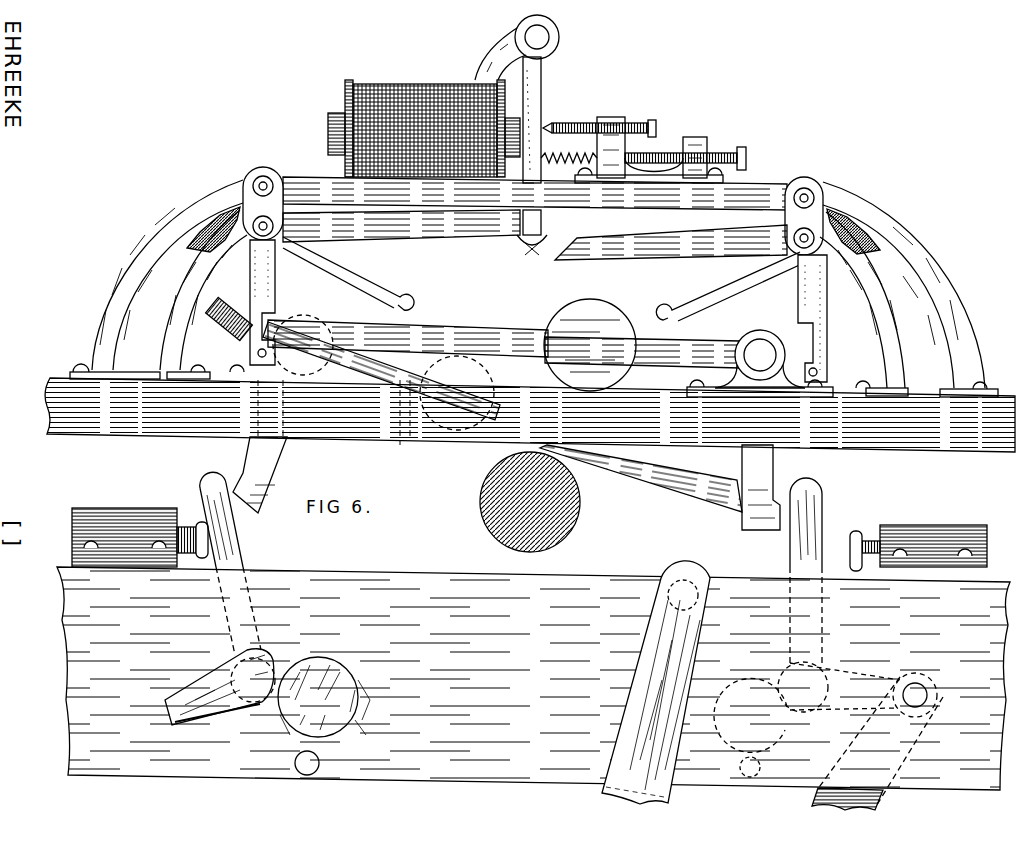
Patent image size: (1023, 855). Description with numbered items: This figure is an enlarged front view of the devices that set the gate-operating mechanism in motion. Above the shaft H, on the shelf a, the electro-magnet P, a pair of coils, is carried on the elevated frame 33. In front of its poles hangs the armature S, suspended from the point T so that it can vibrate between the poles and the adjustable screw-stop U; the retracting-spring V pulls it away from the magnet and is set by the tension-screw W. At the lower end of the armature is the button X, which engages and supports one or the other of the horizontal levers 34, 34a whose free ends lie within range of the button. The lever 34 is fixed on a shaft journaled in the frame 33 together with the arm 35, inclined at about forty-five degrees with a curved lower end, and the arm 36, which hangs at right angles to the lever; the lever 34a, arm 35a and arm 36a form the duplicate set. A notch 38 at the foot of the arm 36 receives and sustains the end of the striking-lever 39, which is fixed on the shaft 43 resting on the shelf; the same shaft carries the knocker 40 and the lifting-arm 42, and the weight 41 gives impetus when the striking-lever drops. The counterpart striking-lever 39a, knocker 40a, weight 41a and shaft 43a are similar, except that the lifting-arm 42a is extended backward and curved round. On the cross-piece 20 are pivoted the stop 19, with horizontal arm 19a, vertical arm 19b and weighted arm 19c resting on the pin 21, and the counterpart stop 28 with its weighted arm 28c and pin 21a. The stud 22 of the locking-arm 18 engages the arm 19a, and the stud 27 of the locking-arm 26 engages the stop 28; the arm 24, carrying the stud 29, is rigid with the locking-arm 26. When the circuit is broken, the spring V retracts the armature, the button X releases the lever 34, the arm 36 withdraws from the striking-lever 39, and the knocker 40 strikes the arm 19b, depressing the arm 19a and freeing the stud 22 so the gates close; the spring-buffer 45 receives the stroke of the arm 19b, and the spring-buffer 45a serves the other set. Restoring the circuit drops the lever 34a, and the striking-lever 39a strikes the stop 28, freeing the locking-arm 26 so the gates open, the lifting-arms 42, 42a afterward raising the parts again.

The base plate a is at (530, 415).
The cross-piece 20 is at (533, 678).
The elevated frame 33 is at (534, 288).
The electro-magnet P is at (424, 128).
The suspension point T is at (517, 47).
The armature S is at (532, 151).
The button X is at (532, 257).
The adjustable screw-stop U is at (605, 129).
The retracting-spring V is at (569, 150).
The adjustable tension-screw W is at (694, 158).
The lever 34 is at (401, 226).
The lever 34a is at (671, 242).
The arm 35 is at (348, 273).
The arm 35a is at (731, 286).
The arm 36 is at (262, 302).
The arm 36a is at (806, 318).
The notch 38 is at (252, 318).
The striking-lever 39 is at (408, 338).
The striking-lever 39a is at (641, 478).
The knocker 40 is at (761, 487).
The knocker 40a is at (260, 475).
The weight 41 is at (590, 345).
The wheel 41a is at (457, 393).
The lifting-arm 42 is at (642, 352).
The lifting-arm 42a is at (381, 367).
The shaft 43 is at (760, 363).
The shaft 43a is at (373, 423).
The shaft H is at (530, 502).
The spring-buffer 45 is at (918, 548).
The block with screw 45a is at (140, 537).
The stop 28 is at (230, 563).
The disk 28c is at (324, 697).
The stud 29 is at (219, 687).
The arm 24 is at (253, 680).
The pin 21a is at (296, 763).
The locking-arm 26 is at (656, 682).
The locking stud 27 is at (683, 595).
The stop 19 is at (803, 687).
The horizontal arm 19a is at (843, 686).
The vertical arm 19b is at (806, 570).
The weighted arm 19c is at (750, 715).
The stud 22 is at (915, 695).
The pin 21 is at (758, 767).
The locking-arm 18 is at (877, 743).